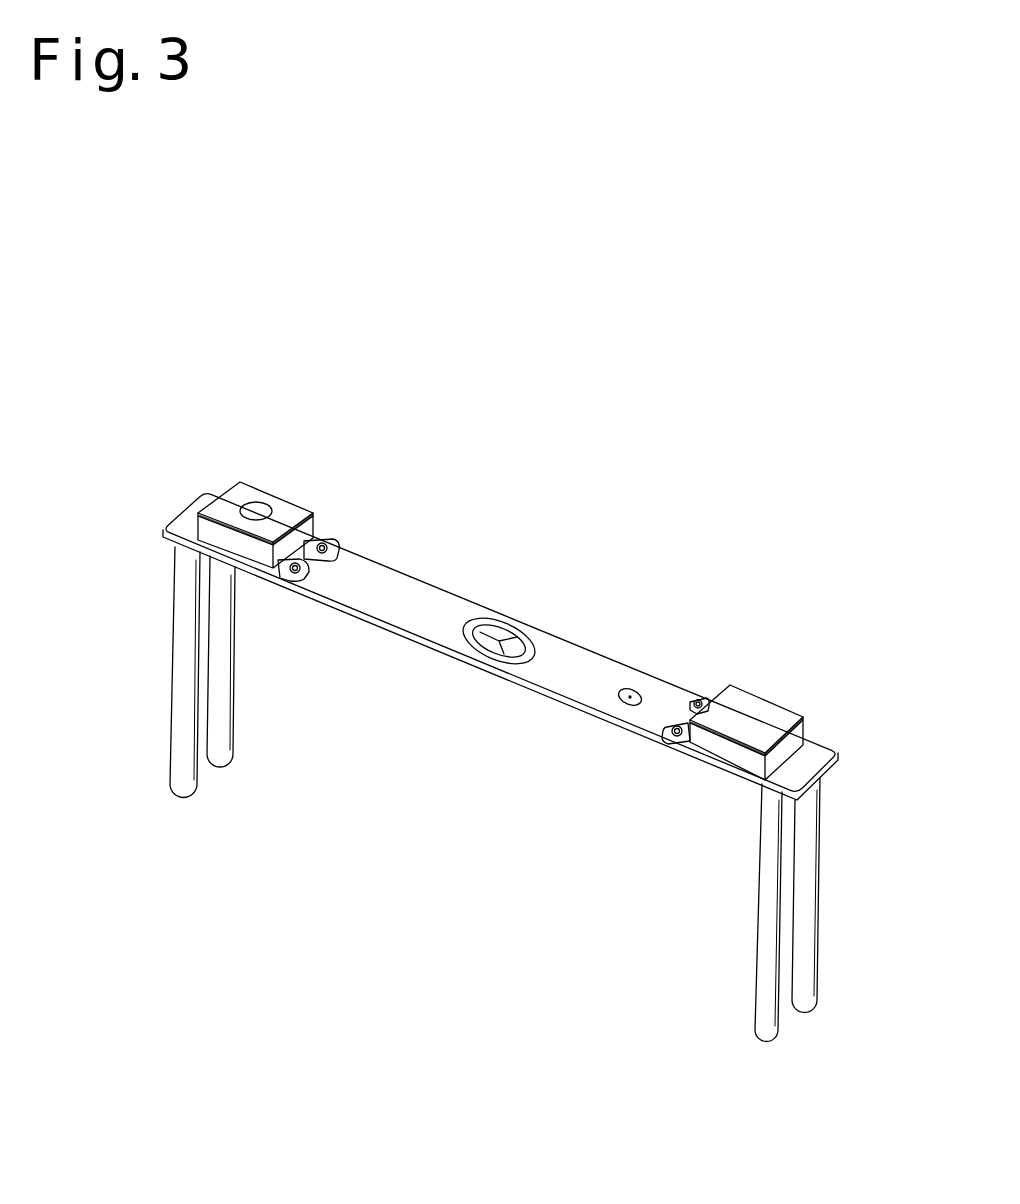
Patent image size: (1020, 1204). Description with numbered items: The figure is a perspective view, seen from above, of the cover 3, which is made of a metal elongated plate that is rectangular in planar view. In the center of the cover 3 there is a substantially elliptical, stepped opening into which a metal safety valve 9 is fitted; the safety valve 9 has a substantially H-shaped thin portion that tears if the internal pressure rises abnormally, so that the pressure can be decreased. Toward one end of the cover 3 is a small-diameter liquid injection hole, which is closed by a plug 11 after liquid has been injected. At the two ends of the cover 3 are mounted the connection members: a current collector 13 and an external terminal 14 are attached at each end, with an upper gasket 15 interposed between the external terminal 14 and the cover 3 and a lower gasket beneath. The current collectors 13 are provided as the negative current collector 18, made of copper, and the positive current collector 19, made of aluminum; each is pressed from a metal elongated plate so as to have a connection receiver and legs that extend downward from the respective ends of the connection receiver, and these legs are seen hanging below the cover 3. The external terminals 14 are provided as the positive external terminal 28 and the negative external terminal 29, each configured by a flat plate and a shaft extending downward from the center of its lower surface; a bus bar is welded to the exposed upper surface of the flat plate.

The cover 3 is at (410, 580).
The safety valve 9 is at (498, 633).
The plug 11 is at (630, 690).
The current collector 13 is at (495, 794).
The external terminal 14 is at (533, 606).
The upper gasket 15 is at (307, 531).
The negative current collector 18 is at (237, 690).
The positive current collector 19 is at (757, 943).
The positive external terminal 28 is at (287, 510).
The negative external terminal 29 is at (755, 707).